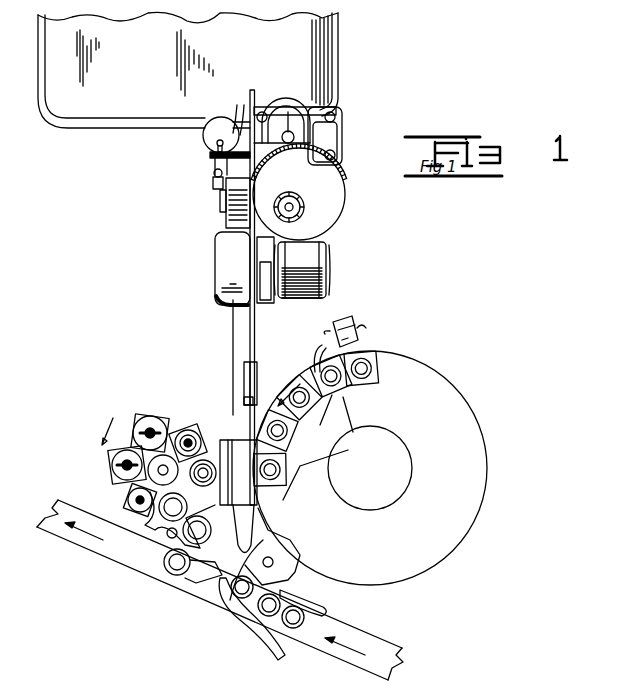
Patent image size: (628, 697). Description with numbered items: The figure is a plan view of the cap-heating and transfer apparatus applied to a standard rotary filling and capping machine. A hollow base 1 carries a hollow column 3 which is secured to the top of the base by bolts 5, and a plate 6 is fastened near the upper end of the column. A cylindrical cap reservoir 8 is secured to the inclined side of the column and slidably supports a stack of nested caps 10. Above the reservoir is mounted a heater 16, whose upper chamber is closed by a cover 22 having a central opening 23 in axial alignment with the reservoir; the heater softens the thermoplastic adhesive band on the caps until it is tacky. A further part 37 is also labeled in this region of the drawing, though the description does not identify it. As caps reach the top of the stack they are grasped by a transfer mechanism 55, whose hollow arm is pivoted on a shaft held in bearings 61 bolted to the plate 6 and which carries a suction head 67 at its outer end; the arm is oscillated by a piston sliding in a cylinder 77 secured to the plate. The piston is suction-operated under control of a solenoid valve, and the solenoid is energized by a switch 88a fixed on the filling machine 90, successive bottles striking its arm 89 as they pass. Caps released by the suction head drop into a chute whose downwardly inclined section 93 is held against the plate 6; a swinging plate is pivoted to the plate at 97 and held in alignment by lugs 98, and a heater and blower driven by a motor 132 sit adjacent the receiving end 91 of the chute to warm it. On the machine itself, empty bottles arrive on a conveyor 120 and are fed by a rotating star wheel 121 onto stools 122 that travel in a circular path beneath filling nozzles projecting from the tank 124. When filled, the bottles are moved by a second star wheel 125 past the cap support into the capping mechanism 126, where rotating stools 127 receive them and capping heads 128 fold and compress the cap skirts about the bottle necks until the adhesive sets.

The hollow base 1 is at (98, 112).
The hollow column 3 is at (318, 135).
The bolts 5 is at (336, 158).
The plate 6 is at (250, 321).
The cap reservoir 8 is at (283, 100).
The caps 10 is at (289, 200).
The heater 16 is at (348, 206).
The cover 22 is at (330, 232).
The central opening 23 is at (305, 205).
The bearing cap 37 is at (300, 96).
The transfer mechanism 55 is at (208, 171).
The bearings 61 is at (237, 112).
The suction head 67 is at (217, 204).
The cylinder 77 is at (204, 137).
The switch 88a is at (348, 316).
The arm 89 is at (324, 358).
The filling machine 90 is at (398, 352).
The receiving end 91 is at (226, 224).
The inclined section 93 is at (237, 335).
The pivot 97 is at (244, 400).
The lugs 98 is at (248, 372).
The conveyor 120 is at (398, 652).
The rotating star wheel 121 is at (290, 565).
The stools 122 is at (370, 468).
The tank 124 is at (484, 470).
The second star wheel 125 is at (210, 436).
The capping mechanism 126 is at (100, 473).
The rotating stools 127 is at (168, 432).
The capping heads 128 is at (130, 420).
The motor 132 is at (298, 302).